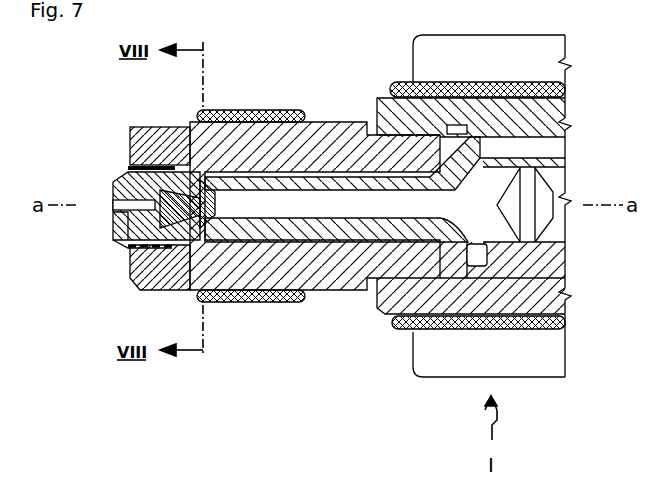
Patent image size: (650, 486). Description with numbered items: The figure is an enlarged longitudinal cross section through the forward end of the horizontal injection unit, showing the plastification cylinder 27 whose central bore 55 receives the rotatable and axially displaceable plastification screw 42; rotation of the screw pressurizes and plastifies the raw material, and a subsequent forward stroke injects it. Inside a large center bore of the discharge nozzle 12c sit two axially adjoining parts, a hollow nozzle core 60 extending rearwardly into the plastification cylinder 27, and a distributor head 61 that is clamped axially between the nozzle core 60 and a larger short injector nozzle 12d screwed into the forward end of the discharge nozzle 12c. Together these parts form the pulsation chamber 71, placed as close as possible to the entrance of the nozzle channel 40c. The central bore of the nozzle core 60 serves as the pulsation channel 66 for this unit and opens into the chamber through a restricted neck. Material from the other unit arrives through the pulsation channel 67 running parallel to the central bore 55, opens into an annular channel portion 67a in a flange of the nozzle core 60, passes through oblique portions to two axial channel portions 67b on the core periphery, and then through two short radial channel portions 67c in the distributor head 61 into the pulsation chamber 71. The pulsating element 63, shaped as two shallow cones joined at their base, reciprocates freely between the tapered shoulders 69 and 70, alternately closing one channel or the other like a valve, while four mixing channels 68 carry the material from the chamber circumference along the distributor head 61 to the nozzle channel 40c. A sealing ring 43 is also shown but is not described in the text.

The discharge nozzle 12c is at (333, 266).
The injector nozzle 12d is at (110, 226).
The plastification cylinder 27 is at (402, 296).
The nozzle channel 40c is at (125, 190).
The plastification screw 42 is at (557, 180).
The sealing ring 43 is at (236, 108).
The central bore 55 is at (474, 232).
The nozzle core 60 is at (282, 228).
The distributor head 61 is at (147, 285).
The pulsating element 63 is at (216, 199).
The pulsation channel 66 is at (313, 204).
The pulsation channel 67 is at (497, 147).
The annular channel portion 67a is at (478, 270).
The axial channel portions 67b is at (359, 120).
The radial channel portions 67c is at (172, 160).
The mixing channels 68 is at (208, 300).
The tapered shoulder 69 is at (130, 258).
The tapered shoulder 70 is at (198, 185).
The pulsation chamber 71 is at (200, 242).